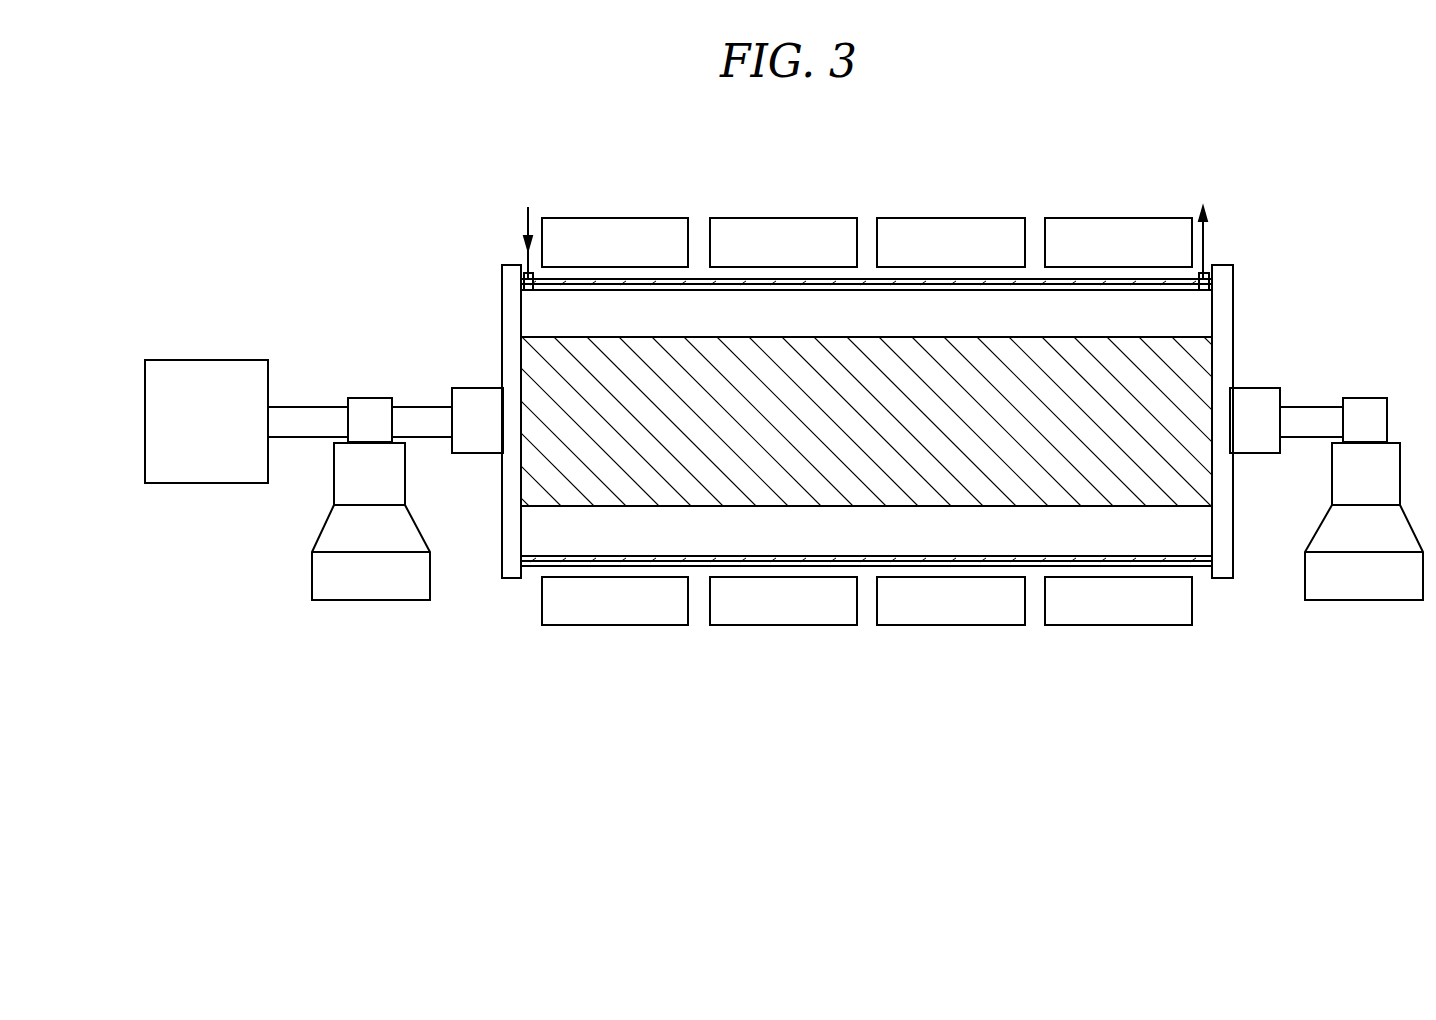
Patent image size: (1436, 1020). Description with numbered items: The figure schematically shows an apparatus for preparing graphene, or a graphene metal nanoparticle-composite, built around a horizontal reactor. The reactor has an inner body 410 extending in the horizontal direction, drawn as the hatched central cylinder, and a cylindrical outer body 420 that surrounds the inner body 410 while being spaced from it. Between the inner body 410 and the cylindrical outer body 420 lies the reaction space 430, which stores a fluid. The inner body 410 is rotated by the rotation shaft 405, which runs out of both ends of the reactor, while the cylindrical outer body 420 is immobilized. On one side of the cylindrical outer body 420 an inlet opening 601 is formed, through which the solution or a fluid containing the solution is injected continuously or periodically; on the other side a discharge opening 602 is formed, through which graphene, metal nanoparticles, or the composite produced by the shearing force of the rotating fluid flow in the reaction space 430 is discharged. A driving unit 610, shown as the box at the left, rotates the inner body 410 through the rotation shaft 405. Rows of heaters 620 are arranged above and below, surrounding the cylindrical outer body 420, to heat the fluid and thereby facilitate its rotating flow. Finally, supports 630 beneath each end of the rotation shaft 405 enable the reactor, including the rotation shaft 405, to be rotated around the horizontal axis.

The driving unit 610 is at (207, 353).
The rotation shaft 405 is at (478, 388).
The inlet opening 601 is at (525, 248).
The discharge opening 602 is at (1206, 262).
The heater 620 is at (950, 240).
The reaction space 430 is at (1185, 313).
The cylindrical outer body 420 is at (865, 560).
The inner body 410 is at (977, 470).
The support 630 is at (328, 573).